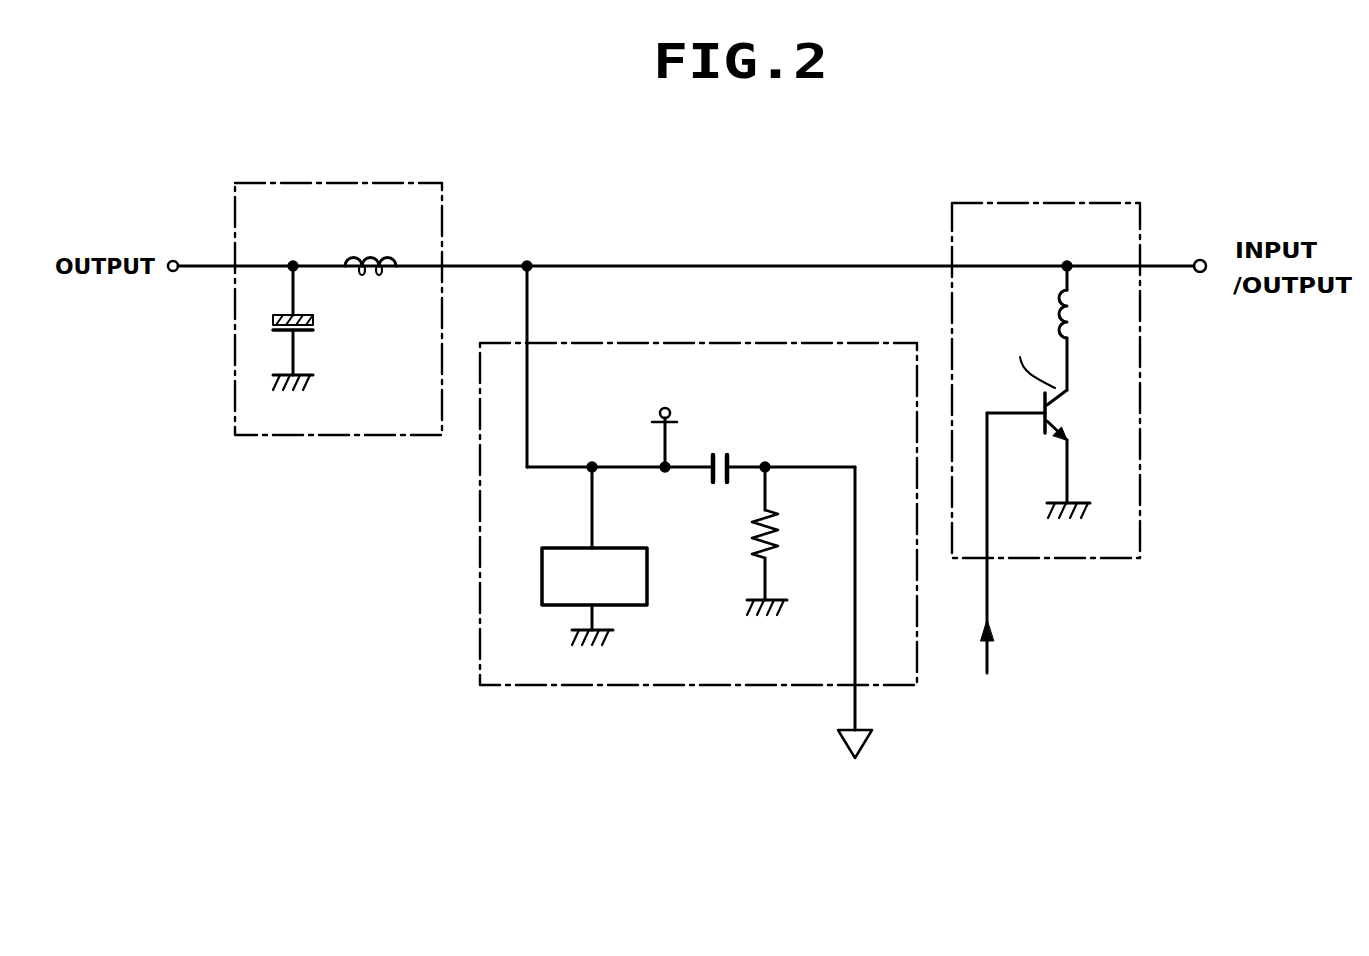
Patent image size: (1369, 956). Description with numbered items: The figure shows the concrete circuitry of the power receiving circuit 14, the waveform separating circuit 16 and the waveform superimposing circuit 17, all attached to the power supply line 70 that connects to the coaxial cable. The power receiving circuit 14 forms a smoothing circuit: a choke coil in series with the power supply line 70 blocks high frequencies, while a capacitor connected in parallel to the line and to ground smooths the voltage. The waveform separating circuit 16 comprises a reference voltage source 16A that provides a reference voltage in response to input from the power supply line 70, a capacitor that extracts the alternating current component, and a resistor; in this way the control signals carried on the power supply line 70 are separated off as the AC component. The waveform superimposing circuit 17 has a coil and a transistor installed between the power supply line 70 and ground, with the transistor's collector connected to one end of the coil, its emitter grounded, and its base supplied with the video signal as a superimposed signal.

The power receiving circuit 14 is at (442, 202).
The waveform separating circuit 16 is at (717, 529).
The reference voltage source 16A is at (647, 573).
The waveform superimposing circuit 17 is at (950, 220).
The power supply line 70 is at (657, 265).